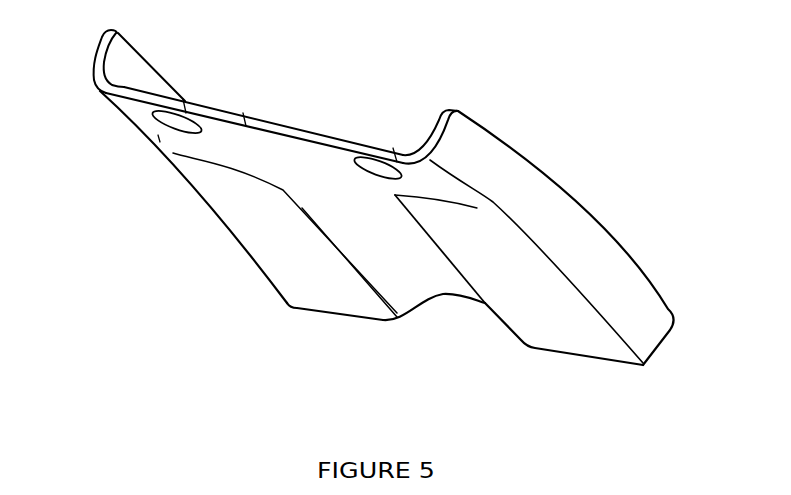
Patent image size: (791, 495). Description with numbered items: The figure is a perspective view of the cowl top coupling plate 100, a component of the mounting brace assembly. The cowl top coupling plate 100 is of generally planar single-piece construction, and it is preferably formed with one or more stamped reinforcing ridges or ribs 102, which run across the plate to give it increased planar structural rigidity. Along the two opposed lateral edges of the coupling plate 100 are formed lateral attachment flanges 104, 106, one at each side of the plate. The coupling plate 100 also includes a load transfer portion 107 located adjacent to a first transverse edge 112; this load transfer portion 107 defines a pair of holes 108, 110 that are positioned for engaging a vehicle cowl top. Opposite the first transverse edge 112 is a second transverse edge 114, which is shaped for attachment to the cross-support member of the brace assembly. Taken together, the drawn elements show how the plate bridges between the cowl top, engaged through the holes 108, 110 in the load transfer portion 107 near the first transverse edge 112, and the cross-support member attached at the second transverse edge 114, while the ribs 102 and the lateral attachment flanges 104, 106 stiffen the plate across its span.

The cowl top coupling plate 100 is at (503, 85).
The stamped reinforcing ridges or ribs 102 is at (330, 310).
The lateral attachment flange 104 is at (118, 59).
The lateral attachment flange 106 is at (557, 215).
The load transfer portion 107 is at (157, 137).
The hole 108 is at (186, 102).
The hole 110 is at (395, 158).
The first transverse edge 112 is at (245, 117).
The second transverse edge 114 is at (452, 295).